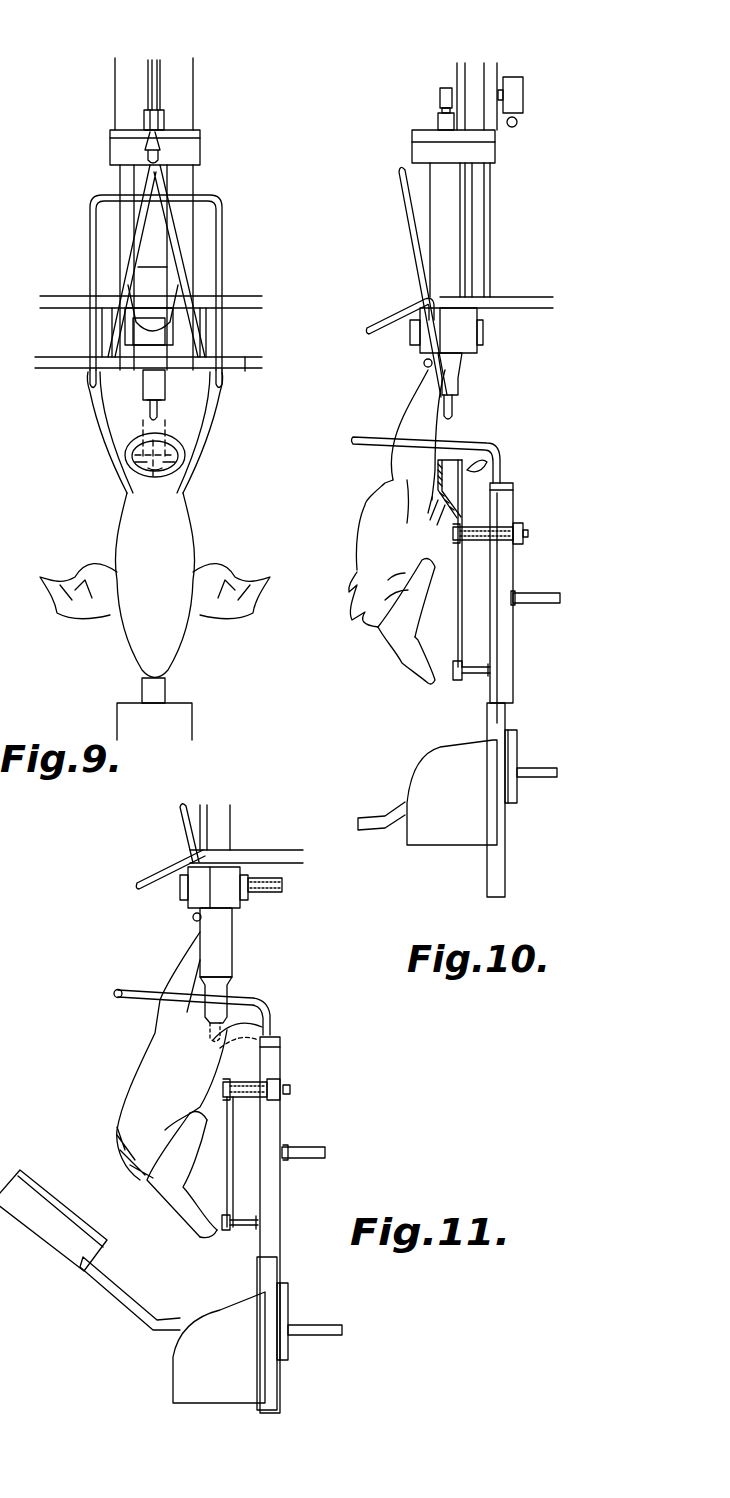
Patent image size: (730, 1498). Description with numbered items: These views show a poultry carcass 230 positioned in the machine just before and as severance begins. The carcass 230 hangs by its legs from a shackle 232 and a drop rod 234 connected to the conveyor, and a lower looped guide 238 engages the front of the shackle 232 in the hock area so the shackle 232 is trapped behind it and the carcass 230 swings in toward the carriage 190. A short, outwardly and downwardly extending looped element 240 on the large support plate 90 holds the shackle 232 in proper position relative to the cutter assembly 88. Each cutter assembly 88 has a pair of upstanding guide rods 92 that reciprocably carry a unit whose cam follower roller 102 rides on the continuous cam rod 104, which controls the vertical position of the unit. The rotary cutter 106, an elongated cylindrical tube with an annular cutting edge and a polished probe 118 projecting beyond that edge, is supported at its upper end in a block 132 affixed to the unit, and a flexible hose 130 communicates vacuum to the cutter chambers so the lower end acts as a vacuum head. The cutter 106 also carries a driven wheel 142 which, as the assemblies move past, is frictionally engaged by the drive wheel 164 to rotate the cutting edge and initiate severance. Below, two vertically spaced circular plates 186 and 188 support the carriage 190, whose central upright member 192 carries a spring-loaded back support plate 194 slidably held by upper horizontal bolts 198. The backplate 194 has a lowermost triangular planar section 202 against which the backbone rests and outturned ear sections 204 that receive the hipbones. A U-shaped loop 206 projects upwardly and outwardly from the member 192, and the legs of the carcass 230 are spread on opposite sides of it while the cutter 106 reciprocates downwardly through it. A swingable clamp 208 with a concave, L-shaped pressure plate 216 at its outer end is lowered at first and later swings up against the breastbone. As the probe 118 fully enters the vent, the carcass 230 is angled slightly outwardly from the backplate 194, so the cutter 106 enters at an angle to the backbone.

In FIG. 9, the cutter assembly 88 is at (205, 115).
In FIG. 9, the support plate 90 is at (238, 298).
In FIG. 10, the support plate 90 is at (512, 296).
In FIG. 11, the support plate 90 is at (250, 859).
In FIG. 9, the guide rods 92 is at (118, 174).
In FIG. 10, the guide rods 92 is at (483, 211).
In FIG. 10, the cam follower roller 102 is at (508, 77).
In FIG. 10, the cam rod 104 is at (517, 123).
In FIG. 9, the rotary cutter 106 is at (139, 391).
In FIG. 10, the rotary cutter 106 is at (461, 379).
In FIG. 11, the rotary cutter 106 is at (234, 948).
In FIG. 9, the probe 118 is at (158, 410).
In FIG. 10, the probe 118 is at (455, 411).
In FIG. 11, the probe 118 is at (256, 1029).
In FIG. 10, the flexible hose 130 is at (443, 88).
In FIG. 9, the block 132 is at (196, 149).
In FIG. 10, the block 132 is at (412, 146).
In FIG. 9, the driven wheel 142 is at (135, 334).
In FIG. 10, the driven wheel 142 is at (479, 334).
In FIG. 11, the driven wheel 142 is at (250, 894).
In FIG. 11, the drive wheel 164 is at (283, 885).
In FIG. 10, the upper circular plate 186 is at (528, 593).
In FIG. 10, the lower circular plate 188 is at (547, 778).
In FIG. 10, the carriage 190 is at (452, 678).
In FIG. 11, the carriage 190 is at (192, 1225).
In FIG. 9, the central upright member 192 is at (158, 691).
In FIG. 10, the central upright member 192 is at (520, 692).
In FIG. 11, the central upright member 192 is at (275, 1196).
In FIG. 10, the back support plate 194 is at (456, 631).
In FIG. 11, the back support plate 194 is at (220, 1197).
In FIG. 10, the upper horizontal bolts 198 is at (501, 527).
In FIG. 11, the upper horizontal bolts 198 is at (263, 1086).
In FIG. 10, the planar section 202 is at (463, 619).
In FIG. 10, the ear sections 204 is at (458, 485).
In FIG. 9, the U-shaped loop 206 is at (185, 448).
In FIG. 10, the U-shaped loop 206 is at (371, 436).
In FIG. 11, the U-shaped loop 206 is at (128, 988).
In FIG. 10, the swingable clamp 208 is at (363, 818).
In FIG. 11, the swingable clamp 208 is at (115, 1310).
In FIG. 11, the pressure plate 216 is at (33, 1197).
In FIG. 9, the poultry carcass 230 is at (130, 533).
In FIG. 10, the poultry carcass 230 is at (378, 521).
In FIG. 11, the poultry carcass 230 is at (145, 1072).
In FIG. 9, the shackle 232 is at (88, 234).
In FIG. 10, the shackle 232 is at (402, 223).
In FIG. 11, the shackle 232 is at (185, 833).
In FIG. 9, the drop rod 234 is at (157, 72).
In FIG. 9, the lower looped guide 238 is at (245, 371).
In FIG. 10, the lower looped guide 238 is at (424, 364).
In FIG. 11, the lower looped guide 238 is at (193, 917).
In FIG. 9, the looped element 240 is at (173, 314).
In FIG. 10, the looped element 240 is at (398, 306).
In FIG. 11, the looped element 240 is at (158, 871).